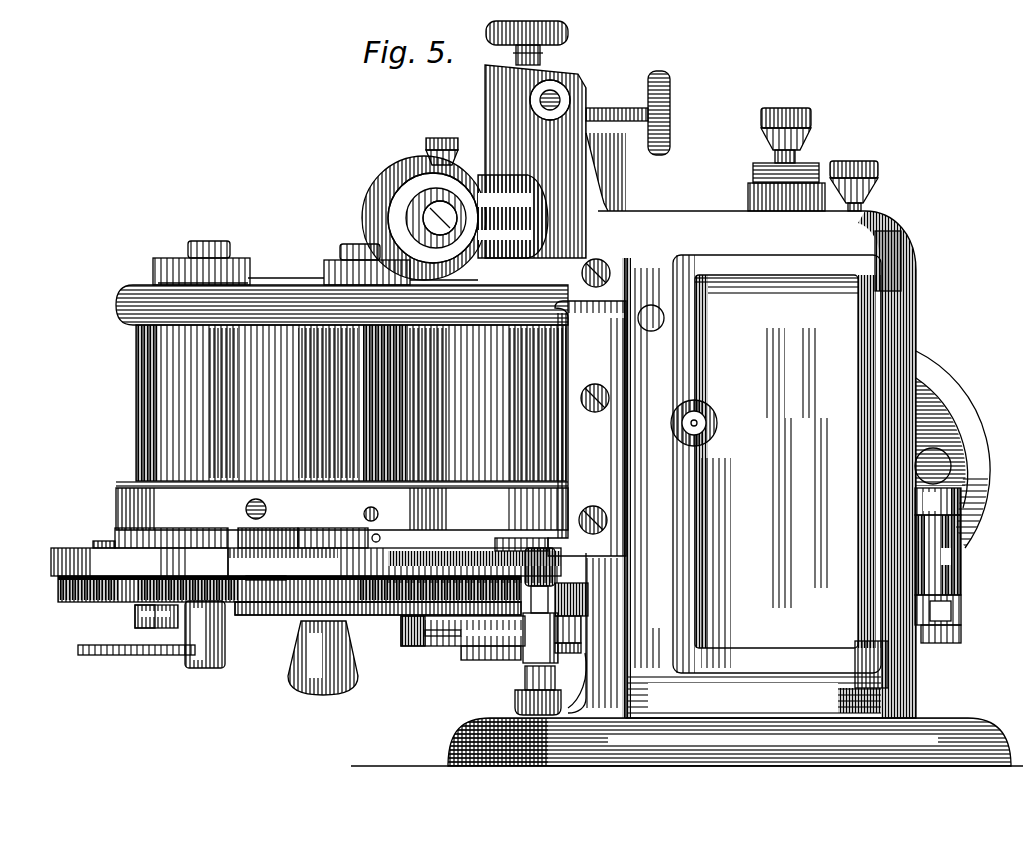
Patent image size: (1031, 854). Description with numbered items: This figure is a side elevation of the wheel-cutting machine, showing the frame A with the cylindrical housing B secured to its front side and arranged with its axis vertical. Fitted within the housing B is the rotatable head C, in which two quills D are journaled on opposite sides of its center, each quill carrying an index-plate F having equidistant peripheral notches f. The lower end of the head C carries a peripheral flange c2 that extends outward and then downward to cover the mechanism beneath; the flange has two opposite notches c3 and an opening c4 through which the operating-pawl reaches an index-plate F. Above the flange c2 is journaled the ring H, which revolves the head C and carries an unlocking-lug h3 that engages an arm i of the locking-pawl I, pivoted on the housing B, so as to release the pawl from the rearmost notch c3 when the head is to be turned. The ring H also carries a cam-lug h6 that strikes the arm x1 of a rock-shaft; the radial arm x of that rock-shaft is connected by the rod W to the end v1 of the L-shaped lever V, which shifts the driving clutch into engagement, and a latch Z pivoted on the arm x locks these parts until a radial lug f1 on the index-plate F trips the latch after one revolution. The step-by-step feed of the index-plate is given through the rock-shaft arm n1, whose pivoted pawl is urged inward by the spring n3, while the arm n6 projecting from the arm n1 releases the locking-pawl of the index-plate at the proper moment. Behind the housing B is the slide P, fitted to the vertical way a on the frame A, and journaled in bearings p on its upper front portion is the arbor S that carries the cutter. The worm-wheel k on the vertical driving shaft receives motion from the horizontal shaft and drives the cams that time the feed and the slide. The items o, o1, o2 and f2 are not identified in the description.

The frame A is at (729, 437).
The vertical way a is at (587, 344).
The slide P is at (478, 101).
The bearings p is at (395, 176).
The arbor S is at (382, 197).
The cylindrical housing B is at (341, 407).
The head C is at (318, 271).
The quills D is at (281, 261).
The ring H is at (108, 525).
The cam-lug h6 is at (95, 540).
The unlocking-lug h3 is at (232, 523).
The arm i is at (278, 528).
The peripheral flange c2 is at (45, 560).
The peripheral notches c3 is at (218, 553).
The opening c4 is at (84, 592).
The index-plate F is at (235, 624).
The stop o is at (140, 604).
The roller o1 is at (174, 612).
The radial lug f1 is at (150, 645).
The locking-pawl I is at (258, 566).
The peripheral notches f is at (280, 584).
The worm-wheel k is at (312, 686).
The arm of rock-shaft x1 is at (540, 605).
The latch Z is at (512, 654).
The arm of rock-shaft n1 is at (578, 614).
The spring n3 is at (580, 592).
The radial arm x is at (575, 640).
The arm n6 is at (404, 638).
The stud o2 is at (432, 615).
The rod f2 is at (474, 645).
The L-shaped lever V is at (938, 481).
The rod W is at (913, 633).
The end of lever v1 is at (950, 628).